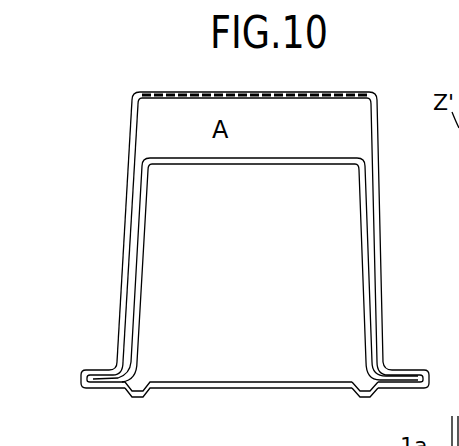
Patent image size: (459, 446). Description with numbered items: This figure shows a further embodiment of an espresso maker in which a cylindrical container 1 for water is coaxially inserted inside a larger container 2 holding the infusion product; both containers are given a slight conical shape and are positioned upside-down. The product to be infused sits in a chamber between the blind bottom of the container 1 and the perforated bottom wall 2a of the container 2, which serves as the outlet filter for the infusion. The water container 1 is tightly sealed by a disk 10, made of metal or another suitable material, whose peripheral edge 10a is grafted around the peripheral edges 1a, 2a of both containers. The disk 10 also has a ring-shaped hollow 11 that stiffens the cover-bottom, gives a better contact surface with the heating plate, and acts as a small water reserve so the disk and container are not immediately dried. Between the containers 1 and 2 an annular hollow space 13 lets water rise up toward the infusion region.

The cylindrical container 1 is at (365, 268).
The peripheral edge 1a is at (398, 372).
The larger container 2 is at (130, 122).
The perforated bottom wall 2a is at (192, 92).
The disk 10 is at (228, 389).
The peripheral edge 10a is at (82, 376).
The ring-shaped hollow 11 is at (362, 397).
The annular hollow space 13 is at (133, 238).